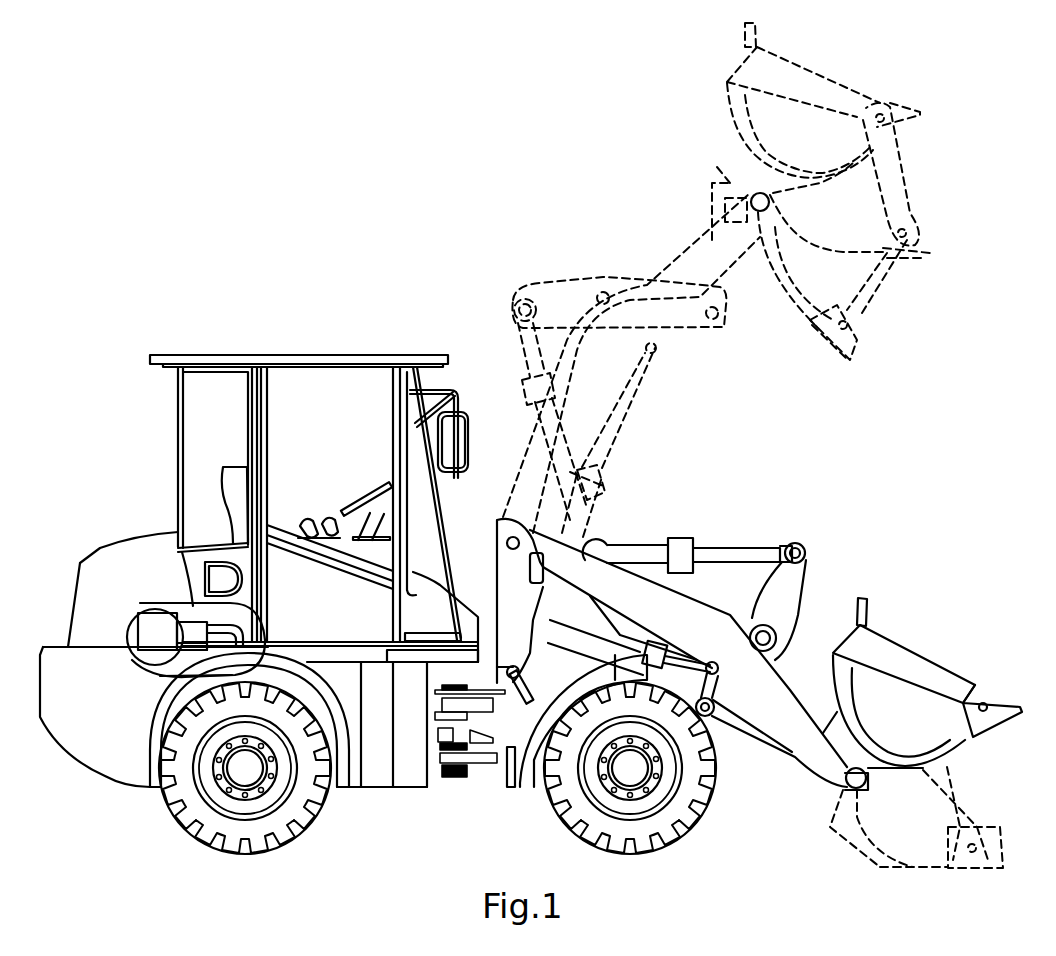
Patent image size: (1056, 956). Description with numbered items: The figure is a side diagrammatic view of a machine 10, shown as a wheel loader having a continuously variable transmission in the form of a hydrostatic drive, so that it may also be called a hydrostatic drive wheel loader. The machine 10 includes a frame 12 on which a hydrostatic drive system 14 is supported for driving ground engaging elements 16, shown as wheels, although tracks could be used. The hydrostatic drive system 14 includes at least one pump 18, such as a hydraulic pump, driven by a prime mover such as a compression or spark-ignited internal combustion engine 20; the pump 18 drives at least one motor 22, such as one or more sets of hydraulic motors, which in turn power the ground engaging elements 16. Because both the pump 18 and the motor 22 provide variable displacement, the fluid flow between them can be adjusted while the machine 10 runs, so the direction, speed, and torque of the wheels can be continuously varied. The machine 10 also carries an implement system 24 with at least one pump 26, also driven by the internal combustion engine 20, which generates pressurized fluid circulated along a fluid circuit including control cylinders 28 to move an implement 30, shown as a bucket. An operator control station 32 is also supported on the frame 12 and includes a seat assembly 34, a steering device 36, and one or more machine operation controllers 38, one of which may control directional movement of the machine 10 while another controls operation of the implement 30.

The machine 10 is at (499, 158).
The frame 12 is at (373, 788).
The hydrostatic drive system 14 is at (154, 653).
The ground engaging elements 16 is at (186, 826).
The pump 18 is at (186, 612).
The internal combustion engine 20 is at (137, 630).
The motor 22 is at (260, 634).
The implement system 24 is at (197, 680).
The pump 26 is at (195, 658).
The control cylinders 28 is at (677, 538).
The implement 30 is at (918, 656).
The operator control station 32 is at (303, 353).
The seat assembly 34 is at (223, 465).
The steering device 36 is at (364, 492).
The machine operation controllers 38 is at (312, 520).